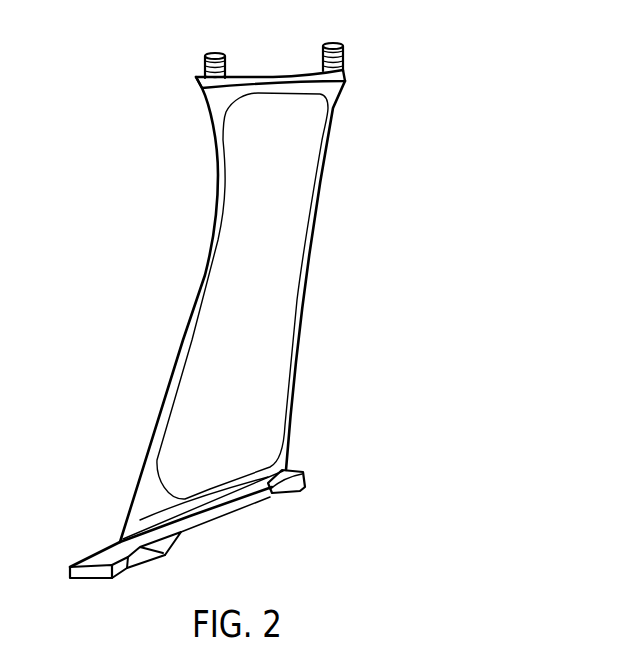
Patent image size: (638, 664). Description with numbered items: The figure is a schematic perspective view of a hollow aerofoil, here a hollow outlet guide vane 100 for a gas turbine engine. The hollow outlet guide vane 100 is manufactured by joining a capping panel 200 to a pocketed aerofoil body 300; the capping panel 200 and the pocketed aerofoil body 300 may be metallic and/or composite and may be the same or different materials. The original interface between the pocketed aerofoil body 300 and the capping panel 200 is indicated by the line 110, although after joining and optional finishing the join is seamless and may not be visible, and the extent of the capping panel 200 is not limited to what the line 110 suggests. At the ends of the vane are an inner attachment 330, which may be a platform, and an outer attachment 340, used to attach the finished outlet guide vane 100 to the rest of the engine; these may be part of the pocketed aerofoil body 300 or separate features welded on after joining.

The hollow outlet guide vane 100 is at (372, 103).
The interface line 110 is at (190, 337).
The capping panel 200 is at (282, 265).
The pocketed aerofoil body 300 is at (148, 495).
The inner attachment 330 is at (278, 493).
The outer attachment 340 is at (275, 76).